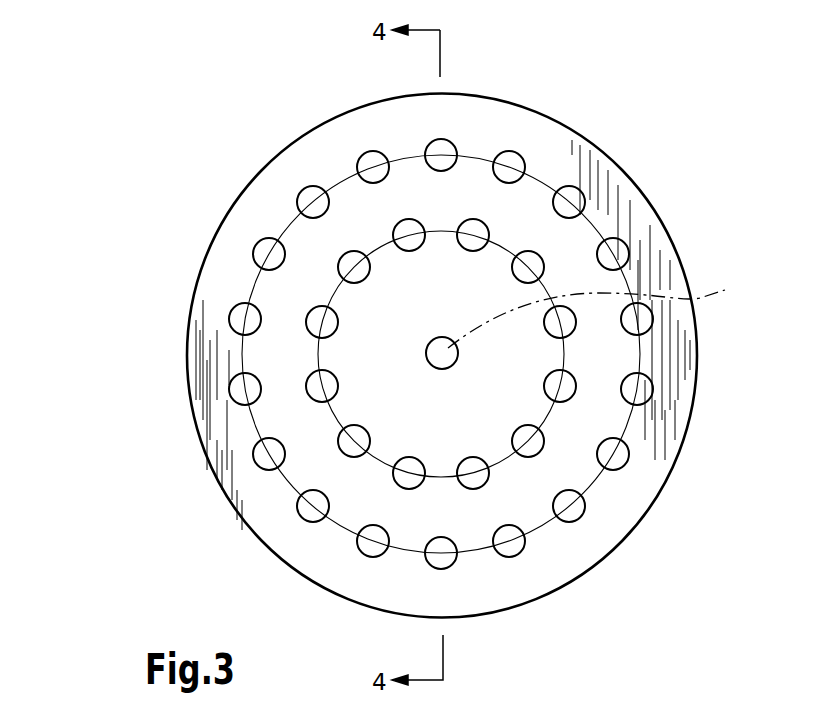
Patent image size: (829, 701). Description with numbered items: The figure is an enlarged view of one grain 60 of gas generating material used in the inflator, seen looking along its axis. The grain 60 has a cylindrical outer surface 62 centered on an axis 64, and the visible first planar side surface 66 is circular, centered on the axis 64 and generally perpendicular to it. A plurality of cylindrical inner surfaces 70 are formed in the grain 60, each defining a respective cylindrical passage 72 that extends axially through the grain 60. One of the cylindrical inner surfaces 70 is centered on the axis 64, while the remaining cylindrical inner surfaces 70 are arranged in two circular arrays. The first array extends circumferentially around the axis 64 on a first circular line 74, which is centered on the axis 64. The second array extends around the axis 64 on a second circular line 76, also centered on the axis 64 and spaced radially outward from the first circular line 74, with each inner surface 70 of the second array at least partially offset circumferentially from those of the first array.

The grain 60 is at (178, 120).
The cylindrical outer surface 62 is at (395, 96).
The axis 64 is at (608, 312).
The first planar side surface 66 is at (268, 195).
The cylindrical inner surfaces 70 is at (237, 317).
The cylindrical passage 72 is at (258, 238).
The first circular line 74 is at (352, 440).
The second circular line 76 is at (285, 495).